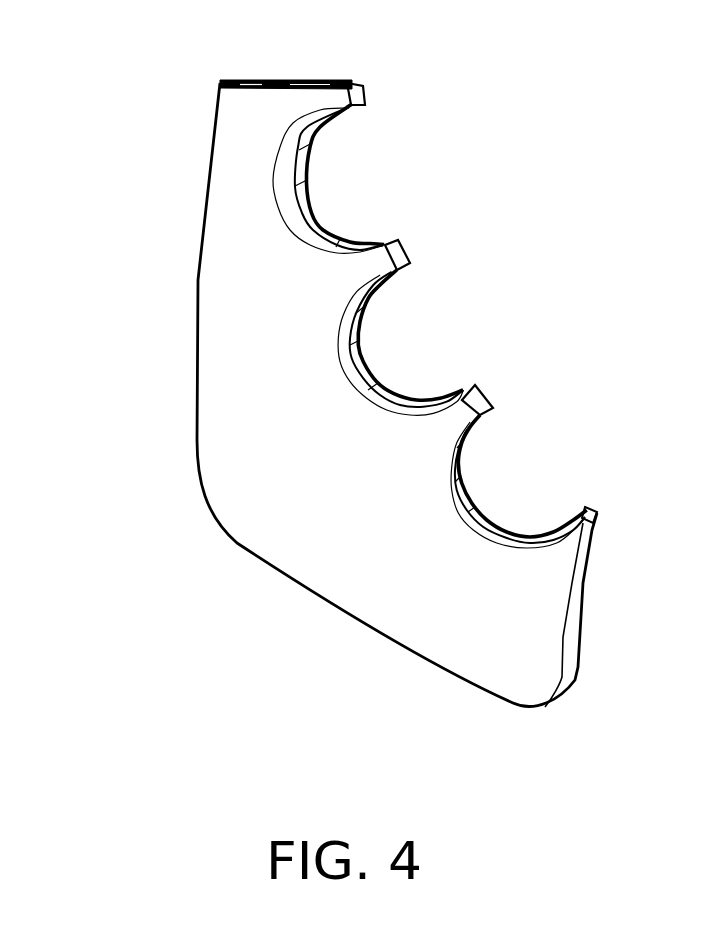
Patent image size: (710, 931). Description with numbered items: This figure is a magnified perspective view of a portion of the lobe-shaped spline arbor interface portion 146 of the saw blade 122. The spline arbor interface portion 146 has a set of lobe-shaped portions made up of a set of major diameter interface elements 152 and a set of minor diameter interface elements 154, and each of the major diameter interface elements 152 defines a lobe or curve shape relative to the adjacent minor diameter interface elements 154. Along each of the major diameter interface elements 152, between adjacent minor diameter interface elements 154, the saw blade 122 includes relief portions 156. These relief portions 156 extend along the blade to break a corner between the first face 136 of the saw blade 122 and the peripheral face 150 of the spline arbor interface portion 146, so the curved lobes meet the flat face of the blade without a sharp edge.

The saw blade 122 is at (222, 85).
The first face 136 is at (312, 359).
The spline arbor interface portion 146 is at (530, 489).
The peripheral face 150 is at (397, 382).
The major diameter interface element 152 is at (413, 302).
The minor diameter interface element 154 is at (420, 228).
The relief portion 156 is at (392, 407).